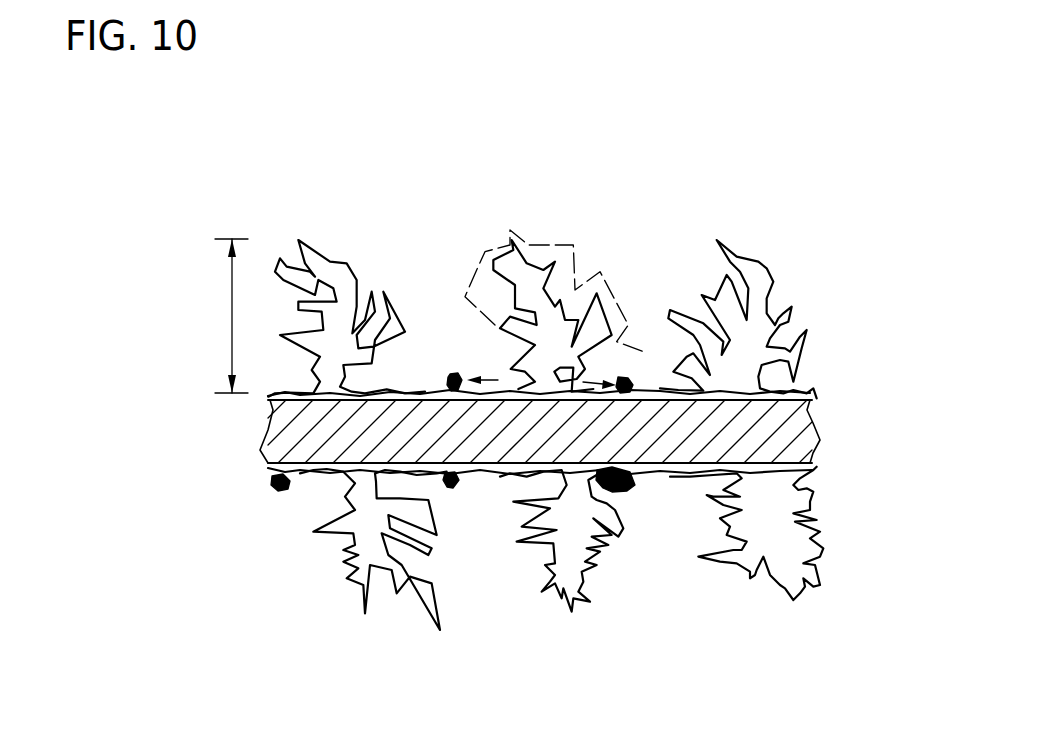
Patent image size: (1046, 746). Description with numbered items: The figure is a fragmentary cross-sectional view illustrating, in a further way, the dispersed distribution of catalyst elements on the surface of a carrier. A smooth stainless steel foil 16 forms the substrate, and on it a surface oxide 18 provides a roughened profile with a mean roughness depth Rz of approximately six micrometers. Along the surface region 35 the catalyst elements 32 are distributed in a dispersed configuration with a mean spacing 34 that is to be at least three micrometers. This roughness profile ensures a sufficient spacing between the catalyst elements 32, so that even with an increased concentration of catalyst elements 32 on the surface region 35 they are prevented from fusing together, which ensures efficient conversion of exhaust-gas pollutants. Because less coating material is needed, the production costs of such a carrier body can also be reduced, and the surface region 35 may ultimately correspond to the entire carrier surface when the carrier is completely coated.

The smooth stainless steel foil 16 is at (787, 433).
The surface oxide 18 is at (793, 543).
The catalyst elements 32 is at (450, 490).
The mean spacing 34 is at (508, 222).
The surface region 35 is at (677, 495).
The mean roughness depth Rz is at (230, 320).